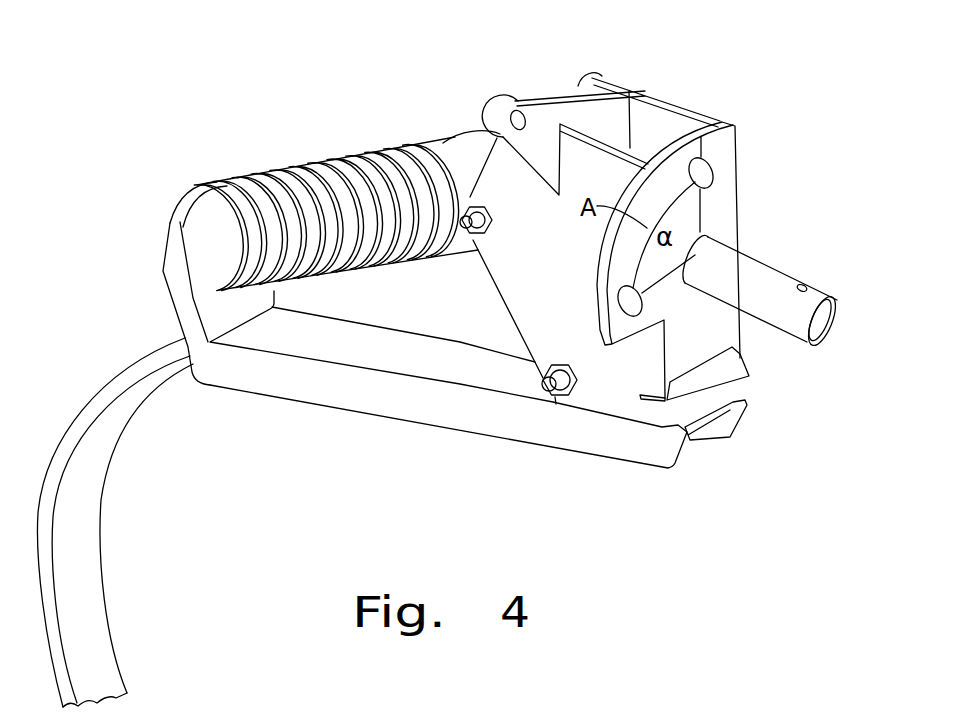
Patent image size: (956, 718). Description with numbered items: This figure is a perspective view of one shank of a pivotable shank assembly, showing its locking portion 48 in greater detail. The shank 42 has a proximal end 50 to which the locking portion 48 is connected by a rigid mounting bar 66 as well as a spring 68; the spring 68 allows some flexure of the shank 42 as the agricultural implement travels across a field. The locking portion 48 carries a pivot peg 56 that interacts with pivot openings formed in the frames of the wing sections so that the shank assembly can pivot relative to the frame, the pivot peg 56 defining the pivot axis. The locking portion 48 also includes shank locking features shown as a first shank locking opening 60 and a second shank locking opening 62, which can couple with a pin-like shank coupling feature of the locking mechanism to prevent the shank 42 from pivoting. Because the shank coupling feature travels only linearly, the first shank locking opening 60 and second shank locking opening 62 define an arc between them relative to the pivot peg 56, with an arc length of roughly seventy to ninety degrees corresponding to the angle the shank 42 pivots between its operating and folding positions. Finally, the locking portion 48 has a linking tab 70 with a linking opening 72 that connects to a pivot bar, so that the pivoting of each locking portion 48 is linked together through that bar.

The shank 42 is at (90, 543).
The locking portion 48 is at (720, 120).
The proximal end 50 is at (173, 338).
The pivot peg 56 is at (778, 273).
The first shank locking opening 60 is at (690, 181).
The second shank locking opening 62 is at (625, 300).
The rigid mounting bar 66 is at (427, 413).
The spring 68 is at (323, 173).
The linking tab 70 is at (562, 92).
The linking opening 72 is at (511, 98).